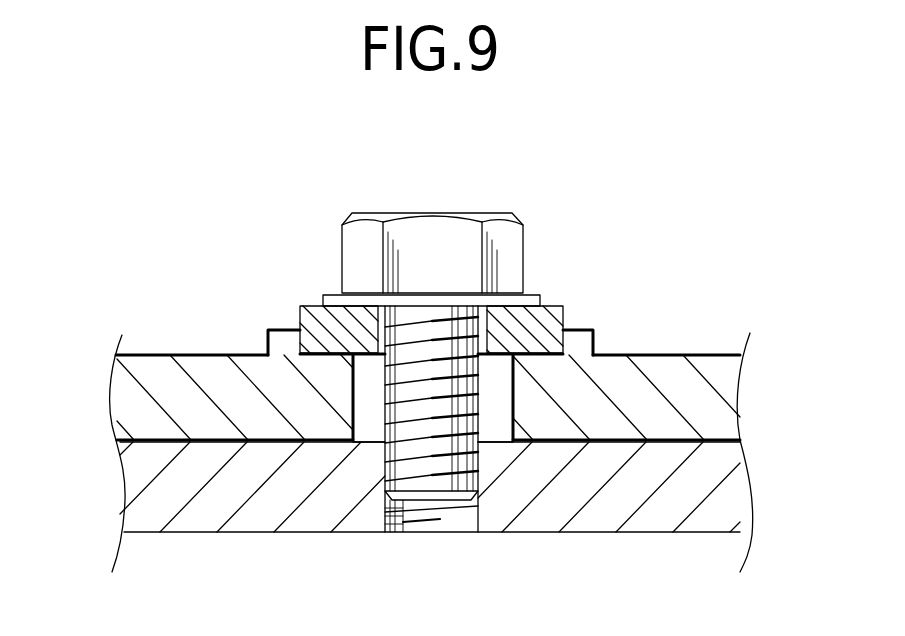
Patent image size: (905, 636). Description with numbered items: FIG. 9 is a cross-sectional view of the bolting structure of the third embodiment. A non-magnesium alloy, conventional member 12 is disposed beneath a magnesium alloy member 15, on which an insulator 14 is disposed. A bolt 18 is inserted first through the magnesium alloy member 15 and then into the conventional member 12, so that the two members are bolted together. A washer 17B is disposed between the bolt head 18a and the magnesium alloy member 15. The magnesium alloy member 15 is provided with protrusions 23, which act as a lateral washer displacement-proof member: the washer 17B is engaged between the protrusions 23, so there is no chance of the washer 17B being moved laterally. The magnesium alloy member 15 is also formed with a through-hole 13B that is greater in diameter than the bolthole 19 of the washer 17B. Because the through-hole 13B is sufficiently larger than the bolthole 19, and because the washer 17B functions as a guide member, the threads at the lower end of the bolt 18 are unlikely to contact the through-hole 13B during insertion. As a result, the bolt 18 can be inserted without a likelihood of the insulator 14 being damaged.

The conventional member 12 is at (125, 478).
The through-hole 13B is at (488, 415).
The insulator 14 is at (172, 355).
The magnesium alloy member 15 is at (110, 392).
The washer 17B is at (315, 305).
The bolt 18 is at (457, 502).
The bolt head 18a is at (527, 255).
The bolthole 19 is at (447, 312).
The protrusions 23 is at (290, 328).